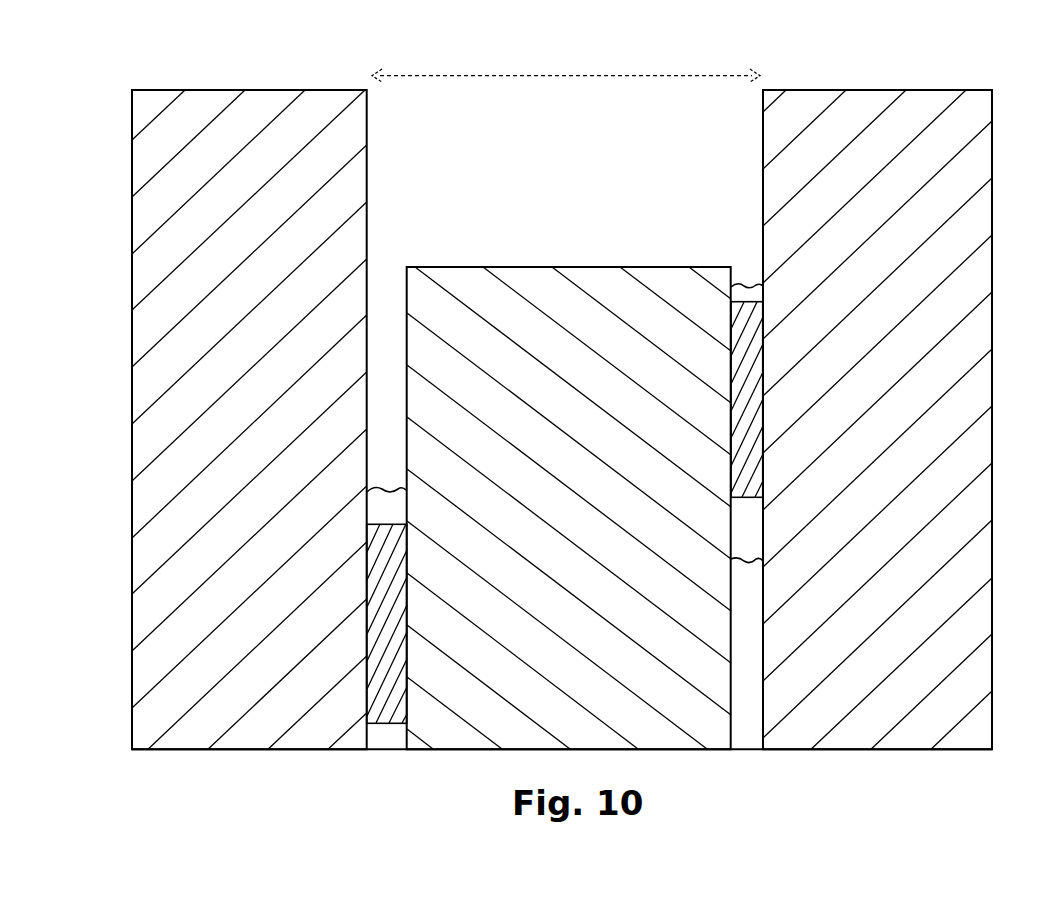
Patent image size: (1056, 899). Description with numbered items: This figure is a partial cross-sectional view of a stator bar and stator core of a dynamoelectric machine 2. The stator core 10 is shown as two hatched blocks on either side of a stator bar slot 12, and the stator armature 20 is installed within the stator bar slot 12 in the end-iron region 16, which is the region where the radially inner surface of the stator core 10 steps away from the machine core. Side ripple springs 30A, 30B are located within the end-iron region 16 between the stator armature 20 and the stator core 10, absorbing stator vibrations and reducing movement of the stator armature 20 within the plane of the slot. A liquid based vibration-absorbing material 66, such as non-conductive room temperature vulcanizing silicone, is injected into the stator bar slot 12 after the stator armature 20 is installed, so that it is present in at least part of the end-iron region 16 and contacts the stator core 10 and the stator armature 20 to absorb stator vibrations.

The dynamoelectric machine 2 is at (112, 96).
The stator core 10 is at (172, 328).
The stator bar slot 12 is at (493, 130).
The end-iron region 16 is at (530, 75).
The stator armature 20 is at (438, 287).
The side ripple spring 30A is at (743, 320).
The side ripple spring 30B is at (388, 688).
The liquid based vibration-absorbing material 66 is at (750, 293).